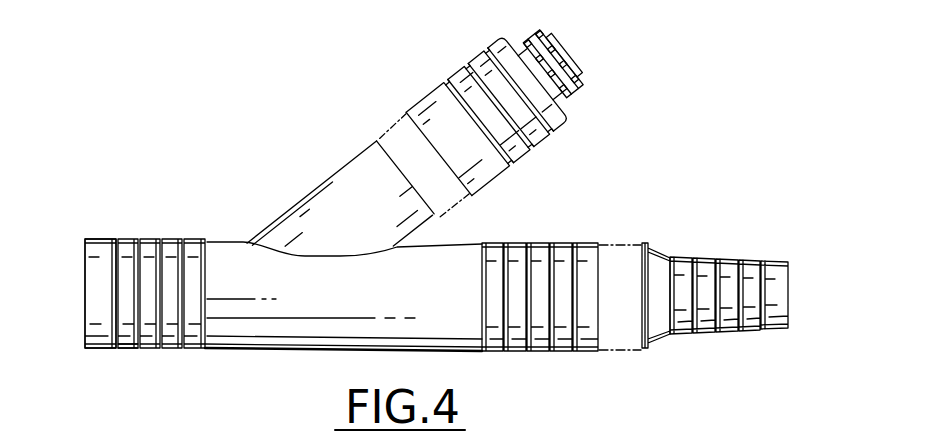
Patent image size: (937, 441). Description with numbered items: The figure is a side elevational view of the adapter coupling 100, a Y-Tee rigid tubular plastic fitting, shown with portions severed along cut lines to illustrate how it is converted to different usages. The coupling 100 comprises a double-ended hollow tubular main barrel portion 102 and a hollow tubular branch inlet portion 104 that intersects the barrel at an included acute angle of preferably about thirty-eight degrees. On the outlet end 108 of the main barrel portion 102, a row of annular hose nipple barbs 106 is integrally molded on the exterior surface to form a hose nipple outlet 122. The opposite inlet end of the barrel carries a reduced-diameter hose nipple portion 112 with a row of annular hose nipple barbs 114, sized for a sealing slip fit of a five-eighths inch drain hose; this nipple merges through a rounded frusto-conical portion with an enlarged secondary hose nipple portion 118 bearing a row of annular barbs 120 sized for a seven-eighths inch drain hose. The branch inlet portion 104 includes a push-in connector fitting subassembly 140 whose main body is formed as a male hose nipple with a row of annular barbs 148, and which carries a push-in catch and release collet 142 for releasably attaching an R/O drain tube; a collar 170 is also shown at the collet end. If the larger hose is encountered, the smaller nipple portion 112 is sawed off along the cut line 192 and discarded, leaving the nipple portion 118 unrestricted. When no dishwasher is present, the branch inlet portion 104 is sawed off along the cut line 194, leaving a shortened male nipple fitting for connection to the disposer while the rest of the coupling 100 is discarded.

The adapter coupling 100 is at (426, 198).
The main barrel portion 102 is at (384, 349).
The branch inlet portion 104 is at (447, 227).
The annular hose nipple barbs 106 is at (173, 238).
The outlet end 108 is at (88, 262).
The hose nipple portion 112 is at (736, 300).
The annular hose nipple barbs 114 is at (708, 335).
The secondary hose nipple portion 118 is at (591, 352).
The annular barbs 120 is at (566, 352).
The hose nipple outlet 122 is at (128, 348).
The push-in connector fitting subassembly 140 is at (557, 149).
The push-in catch and release collet 142 is at (582, 86).
The annular barbs 148 is at (450, 68).
The locking nut 170 is at (523, 33).
The cut line 192 is at (637, 243).
The cut line 194 is at (378, 140).